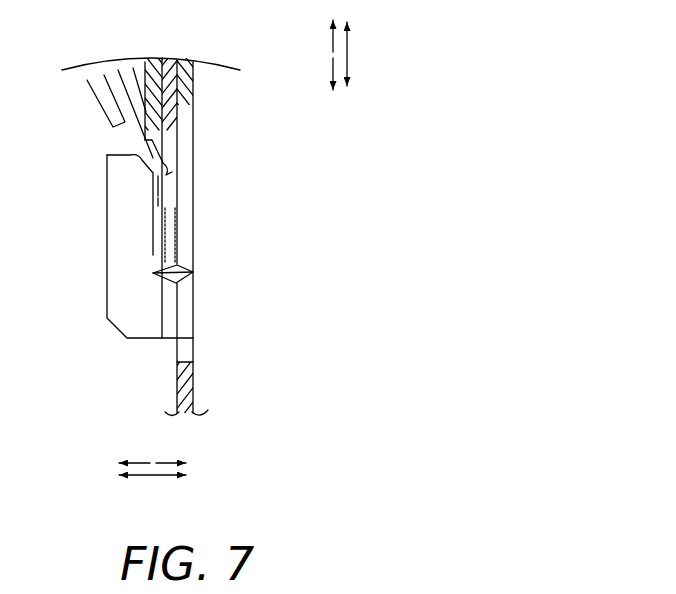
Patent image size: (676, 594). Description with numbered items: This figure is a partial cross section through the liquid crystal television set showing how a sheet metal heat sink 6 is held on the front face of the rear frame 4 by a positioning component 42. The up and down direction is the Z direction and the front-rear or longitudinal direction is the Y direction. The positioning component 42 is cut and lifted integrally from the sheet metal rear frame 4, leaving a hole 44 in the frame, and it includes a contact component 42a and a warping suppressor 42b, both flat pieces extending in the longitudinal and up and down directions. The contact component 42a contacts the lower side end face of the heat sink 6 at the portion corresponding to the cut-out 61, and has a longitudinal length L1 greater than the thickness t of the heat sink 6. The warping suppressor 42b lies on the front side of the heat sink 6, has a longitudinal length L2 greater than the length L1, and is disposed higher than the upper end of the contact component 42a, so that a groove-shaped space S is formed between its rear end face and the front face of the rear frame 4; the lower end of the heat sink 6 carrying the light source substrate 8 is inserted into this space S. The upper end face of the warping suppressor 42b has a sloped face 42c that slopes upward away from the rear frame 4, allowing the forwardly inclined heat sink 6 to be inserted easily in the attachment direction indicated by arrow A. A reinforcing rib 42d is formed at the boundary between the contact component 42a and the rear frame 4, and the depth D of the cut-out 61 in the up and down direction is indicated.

The rear frame 4 is at (183, 62).
The heat sink 6 is at (103, 76).
The light source substrate 8 is at (83, 78).
The hole 44 is at (191, 118).
The positioning component 42 is at (268, 170).
The contact component 42a is at (168, 220).
The warping suppressor 42b is at (162, 190).
The sloped face 42c is at (134, 153).
The reinforcing rib 42d is at (180, 268).
The cut-out 61 is at (160, 207).
The attachment direction arrow A is at (138, 79).
The thickness of heat sink t is at (150, 50).
The groove-shaped space S is at (172, 172).
The length of contact component L1 is at (188, 198).
The length of warping suppressor L2 is at (153, 187).
The depth of cut-out D is at (170, 211).
The Z direction Z is at (337, 55).
The Y direction Y is at (152, 468).